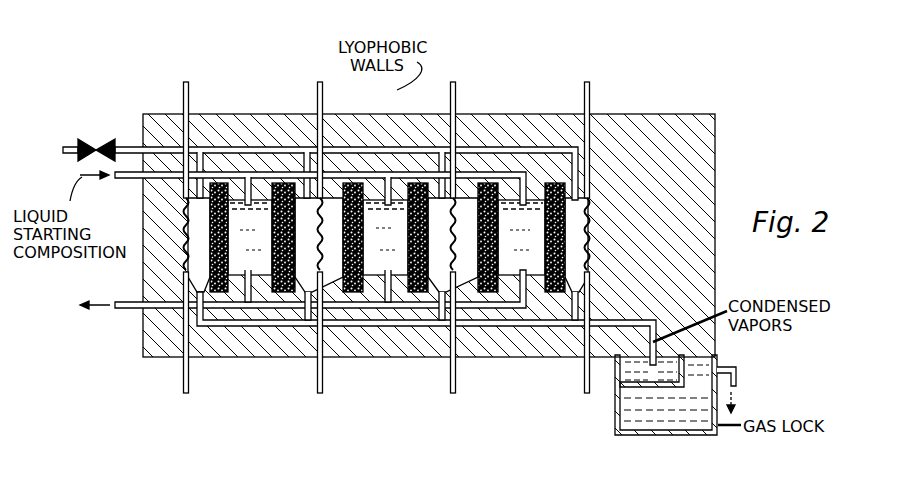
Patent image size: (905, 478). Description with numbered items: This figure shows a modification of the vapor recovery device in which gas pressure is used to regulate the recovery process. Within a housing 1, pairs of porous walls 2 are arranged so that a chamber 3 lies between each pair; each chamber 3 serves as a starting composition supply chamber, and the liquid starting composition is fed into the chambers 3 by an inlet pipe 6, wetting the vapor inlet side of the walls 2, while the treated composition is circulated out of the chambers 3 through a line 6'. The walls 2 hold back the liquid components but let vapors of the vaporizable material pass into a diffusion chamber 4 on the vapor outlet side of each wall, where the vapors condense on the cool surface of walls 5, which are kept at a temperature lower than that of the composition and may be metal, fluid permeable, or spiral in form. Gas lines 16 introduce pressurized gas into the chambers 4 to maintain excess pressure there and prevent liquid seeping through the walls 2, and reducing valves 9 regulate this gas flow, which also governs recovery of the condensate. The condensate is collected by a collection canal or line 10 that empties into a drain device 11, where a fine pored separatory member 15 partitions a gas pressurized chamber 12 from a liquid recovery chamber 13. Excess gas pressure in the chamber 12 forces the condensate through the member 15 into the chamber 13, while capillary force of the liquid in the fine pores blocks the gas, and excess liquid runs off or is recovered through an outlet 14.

The housing 1 is at (660, 124).
The porous walls 2 is at (409, 181).
The chamber 3 is at (263, 203).
The diffusion chamber 4 is at (204, 208).
The walls 5 is at (456, 88).
The inlet pipe 6 is at (303, 189).
The line 6' is at (303, 305).
The reducing valves 9 is at (108, 138).
The collection canal or line 10 is at (553, 327).
The drain device 11 is at (612, 373).
The gas pressurized chamber 12 is at (640, 378).
The liquid recovery chamber 13 is at (694, 415).
The outlet 14 is at (739, 370).
The fine pored separatory member 15 is at (653, 398).
The gas lines 16 is at (511, 148).